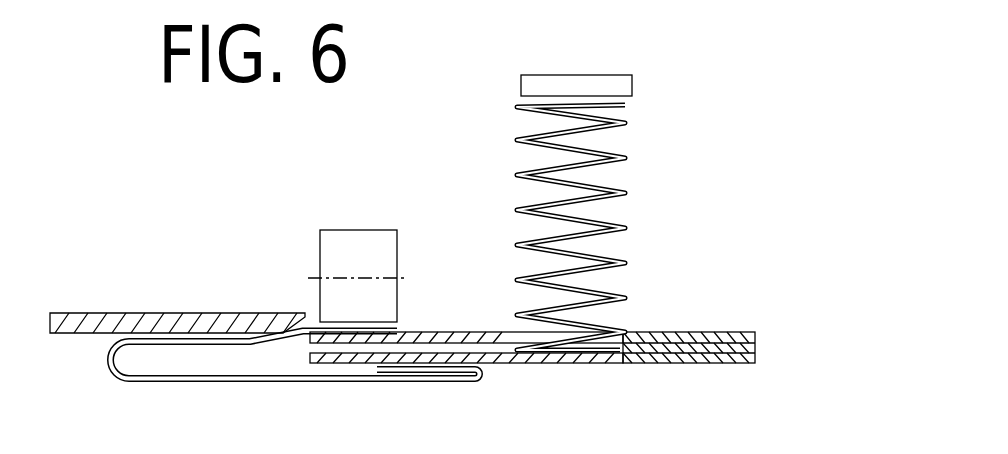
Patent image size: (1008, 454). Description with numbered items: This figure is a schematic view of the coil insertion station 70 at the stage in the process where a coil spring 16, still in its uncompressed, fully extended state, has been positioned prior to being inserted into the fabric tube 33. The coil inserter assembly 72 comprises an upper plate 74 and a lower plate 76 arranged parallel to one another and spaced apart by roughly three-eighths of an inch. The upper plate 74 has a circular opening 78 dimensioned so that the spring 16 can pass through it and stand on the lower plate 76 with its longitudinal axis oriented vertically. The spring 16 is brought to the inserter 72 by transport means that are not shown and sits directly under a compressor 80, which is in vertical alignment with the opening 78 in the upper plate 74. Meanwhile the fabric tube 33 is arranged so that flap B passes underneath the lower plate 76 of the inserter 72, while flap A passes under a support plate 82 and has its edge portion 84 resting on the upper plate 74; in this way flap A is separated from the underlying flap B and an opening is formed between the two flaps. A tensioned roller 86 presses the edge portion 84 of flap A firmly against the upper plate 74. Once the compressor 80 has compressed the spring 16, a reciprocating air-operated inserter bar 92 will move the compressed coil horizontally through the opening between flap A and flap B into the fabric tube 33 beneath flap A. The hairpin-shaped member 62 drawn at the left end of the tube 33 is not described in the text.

The coil spring 16 is at (623, 193).
The fabric tube 33 is at (106, 380).
The clip 62 is at (300, 385).
The coil insertion station 70 is at (203, 198).
The coil inserter assembly 72 is at (458, 321).
The upper plate 74 is at (673, 332).
The lower plate 76 is at (643, 365).
The circular opening 78 is at (617, 331).
The compressor 80 is at (615, 75).
The support plate 82 is at (215, 312).
The edge portion 84 is at (397, 328).
The tensioned roller 86 is at (358, 240).
The inserter bar 92 is at (755, 350).
The flap A is at (276, 325).
The flap B is at (418, 375).